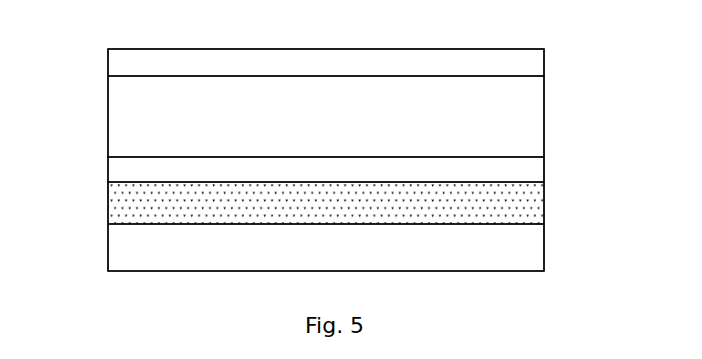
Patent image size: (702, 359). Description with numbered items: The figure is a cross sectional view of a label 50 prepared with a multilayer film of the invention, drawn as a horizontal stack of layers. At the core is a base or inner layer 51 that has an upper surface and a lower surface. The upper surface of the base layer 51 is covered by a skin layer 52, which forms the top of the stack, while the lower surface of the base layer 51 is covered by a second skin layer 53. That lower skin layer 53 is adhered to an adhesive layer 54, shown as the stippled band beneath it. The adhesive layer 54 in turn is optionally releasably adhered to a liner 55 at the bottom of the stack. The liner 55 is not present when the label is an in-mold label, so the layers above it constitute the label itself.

The label 50 is at (70, 63).
The base layer 51 is at (530, 118).
The skin layer 52 is at (528, 62).
The skin layer 53 is at (525, 165).
The adhesive layer 54 is at (523, 204).
The liner 55 is at (523, 243).